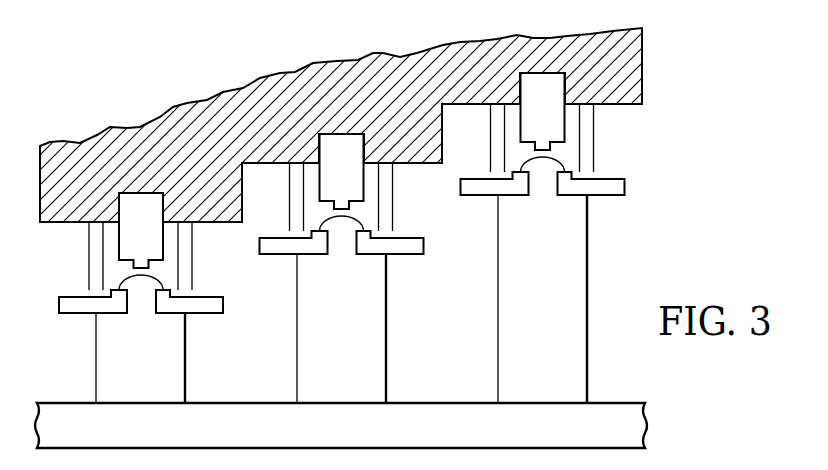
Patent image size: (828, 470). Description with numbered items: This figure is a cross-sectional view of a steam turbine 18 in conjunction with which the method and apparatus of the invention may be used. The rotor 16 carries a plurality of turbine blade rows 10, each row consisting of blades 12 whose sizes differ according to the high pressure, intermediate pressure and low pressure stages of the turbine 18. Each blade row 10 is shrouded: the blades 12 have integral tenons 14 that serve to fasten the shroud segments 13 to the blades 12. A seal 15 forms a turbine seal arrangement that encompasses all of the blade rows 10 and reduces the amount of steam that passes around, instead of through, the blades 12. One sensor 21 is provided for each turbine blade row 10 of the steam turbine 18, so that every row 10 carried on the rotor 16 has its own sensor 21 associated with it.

The turbine blade row 10 is at (343, 238).
The blades 12 is at (582, 308).
The shroud segments 13 is at (470, 187).
The tenons 14 is at (530, 158).
The seal 15 is at (492, 133).
The rotor 16 is at (645, 410).
The steam turbine 18 is at (69, 392).
The sensor 21 is at (552, 122).